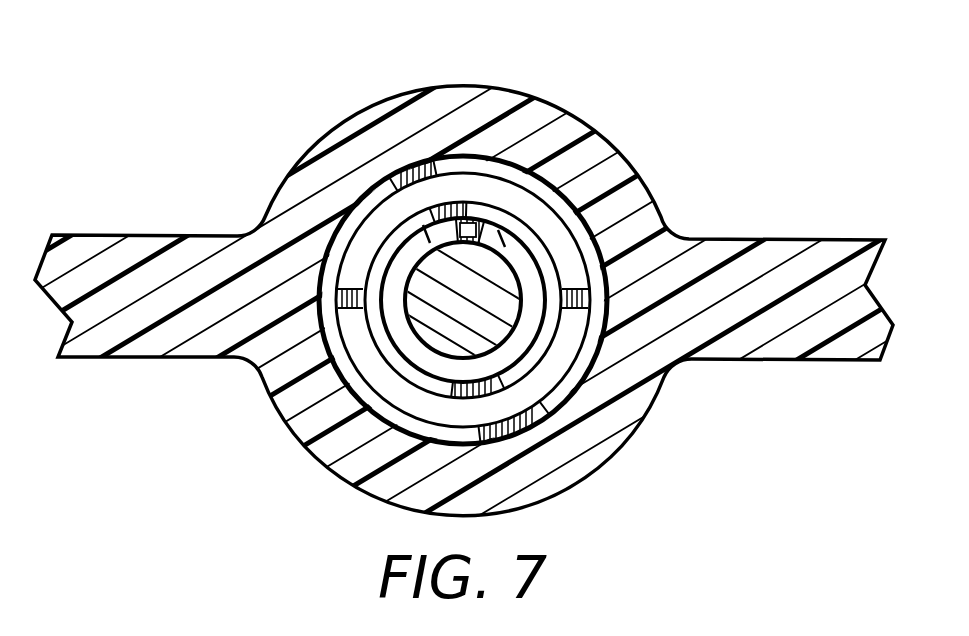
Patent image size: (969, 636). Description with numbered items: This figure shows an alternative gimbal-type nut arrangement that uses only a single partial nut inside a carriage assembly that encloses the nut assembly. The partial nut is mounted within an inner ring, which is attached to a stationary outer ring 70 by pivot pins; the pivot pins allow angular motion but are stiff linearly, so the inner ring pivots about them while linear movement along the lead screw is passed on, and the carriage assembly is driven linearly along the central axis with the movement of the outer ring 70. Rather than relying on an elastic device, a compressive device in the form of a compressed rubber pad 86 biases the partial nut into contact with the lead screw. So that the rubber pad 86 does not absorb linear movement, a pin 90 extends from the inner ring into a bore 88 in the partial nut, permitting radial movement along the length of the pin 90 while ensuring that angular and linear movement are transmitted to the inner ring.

The outer ring 70 is at (578, 386).
The compressed rubber pad 86 is at (428, 208).
The bore 88 is at (457, 217).
The pin 90 is at (445, 222).